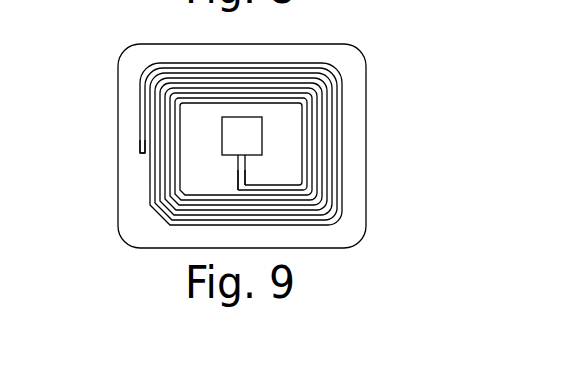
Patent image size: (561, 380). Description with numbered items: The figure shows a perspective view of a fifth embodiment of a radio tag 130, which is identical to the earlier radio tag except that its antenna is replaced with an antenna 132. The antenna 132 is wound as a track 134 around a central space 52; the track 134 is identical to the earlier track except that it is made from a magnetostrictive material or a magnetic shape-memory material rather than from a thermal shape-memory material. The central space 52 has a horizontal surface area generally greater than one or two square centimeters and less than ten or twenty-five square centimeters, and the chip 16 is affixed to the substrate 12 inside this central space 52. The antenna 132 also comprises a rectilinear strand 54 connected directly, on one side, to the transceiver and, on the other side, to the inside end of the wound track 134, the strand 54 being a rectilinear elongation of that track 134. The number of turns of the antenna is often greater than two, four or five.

The radio tag 130 is at (362, 20).
The substrate 12 is at (352, 114).
The chip 16 is at (247, 152).
The central space 52 is at (191, 129).
The antenna 132 is at (70, 168).
The track 134 is at (150, 172).
The rectilinear strand 54 is at (240, 186).